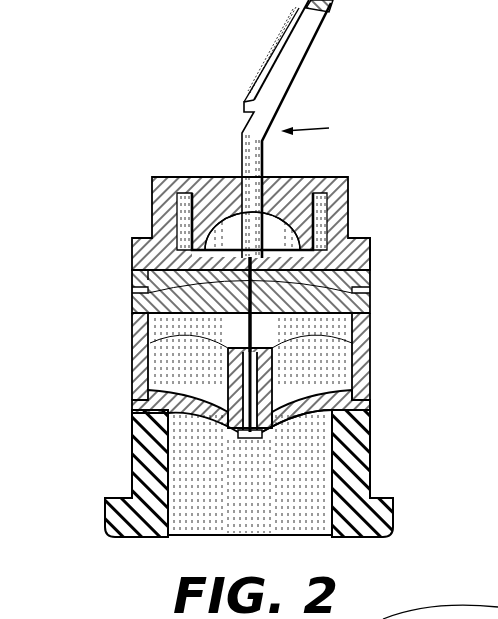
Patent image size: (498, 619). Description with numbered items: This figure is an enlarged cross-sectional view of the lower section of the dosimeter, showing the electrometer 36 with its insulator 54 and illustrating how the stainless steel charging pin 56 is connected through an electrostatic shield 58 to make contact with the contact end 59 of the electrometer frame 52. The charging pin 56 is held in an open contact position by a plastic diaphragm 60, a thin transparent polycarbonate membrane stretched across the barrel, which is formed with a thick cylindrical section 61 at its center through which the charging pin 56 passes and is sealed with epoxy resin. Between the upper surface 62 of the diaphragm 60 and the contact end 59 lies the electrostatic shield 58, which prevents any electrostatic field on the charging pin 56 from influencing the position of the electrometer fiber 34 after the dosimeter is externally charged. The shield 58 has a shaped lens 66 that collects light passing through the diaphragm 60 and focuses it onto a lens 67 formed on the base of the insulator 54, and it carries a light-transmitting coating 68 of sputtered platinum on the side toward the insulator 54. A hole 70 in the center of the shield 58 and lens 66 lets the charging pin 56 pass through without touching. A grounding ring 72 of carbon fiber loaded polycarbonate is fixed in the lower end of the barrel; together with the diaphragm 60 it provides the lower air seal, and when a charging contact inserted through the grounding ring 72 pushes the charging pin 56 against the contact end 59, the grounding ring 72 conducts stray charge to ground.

The electrometer fiber 34 is at (297, 9).
The electrometer frame 52 is at (304, 56).
The electrometer 36 is at (318, 127).
The insulator 54 is at (204, 177).
The lens 67 is at (288, 212).
The light-transmitting coating 68 is at (348, 238).
The hole 70 is at (132, 270).
The contact end 59 is at (352, 276).
The electrostatic shield 58 is at (353, 292).
The shaped lens 66 is at (133, 357).
The upper surface 62 is at (363, 369).
The thick cylindrical section 61 is at (130, 400).
The diaphragm 60 is at (366, 399).
The charging pin 56 is at (365, 437).
The grounding ring 72 is at (130, 453).